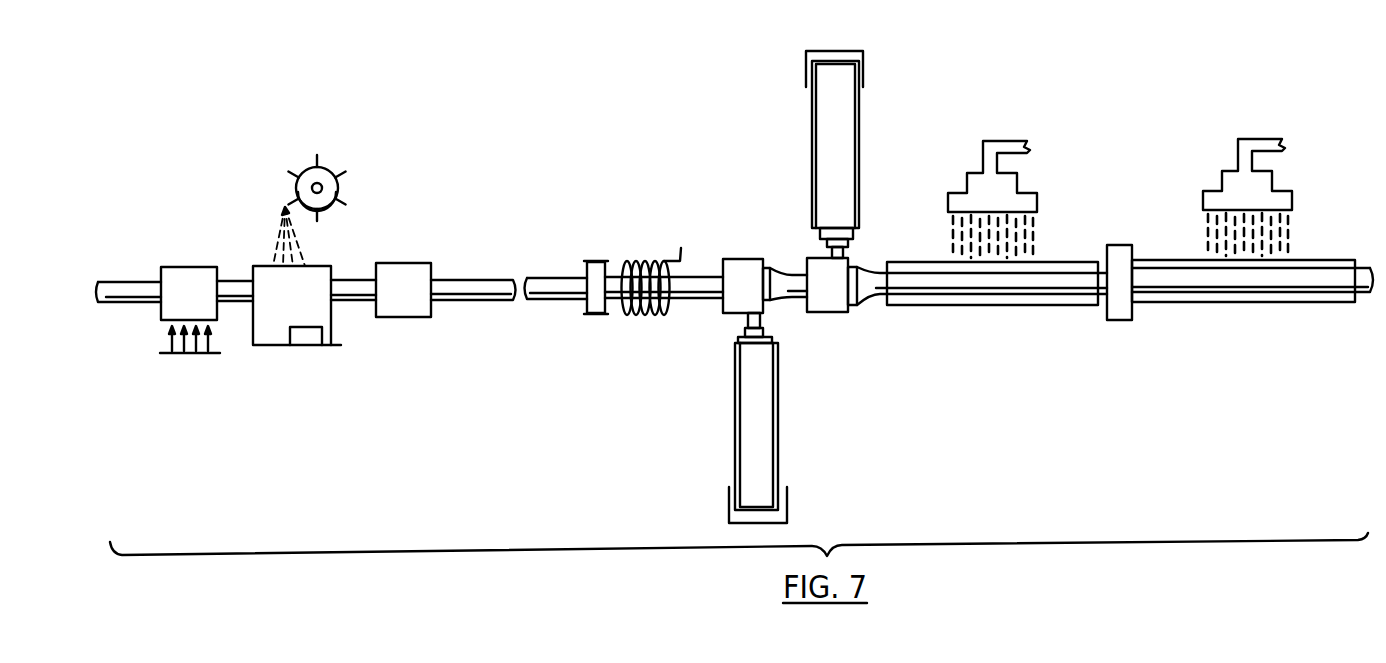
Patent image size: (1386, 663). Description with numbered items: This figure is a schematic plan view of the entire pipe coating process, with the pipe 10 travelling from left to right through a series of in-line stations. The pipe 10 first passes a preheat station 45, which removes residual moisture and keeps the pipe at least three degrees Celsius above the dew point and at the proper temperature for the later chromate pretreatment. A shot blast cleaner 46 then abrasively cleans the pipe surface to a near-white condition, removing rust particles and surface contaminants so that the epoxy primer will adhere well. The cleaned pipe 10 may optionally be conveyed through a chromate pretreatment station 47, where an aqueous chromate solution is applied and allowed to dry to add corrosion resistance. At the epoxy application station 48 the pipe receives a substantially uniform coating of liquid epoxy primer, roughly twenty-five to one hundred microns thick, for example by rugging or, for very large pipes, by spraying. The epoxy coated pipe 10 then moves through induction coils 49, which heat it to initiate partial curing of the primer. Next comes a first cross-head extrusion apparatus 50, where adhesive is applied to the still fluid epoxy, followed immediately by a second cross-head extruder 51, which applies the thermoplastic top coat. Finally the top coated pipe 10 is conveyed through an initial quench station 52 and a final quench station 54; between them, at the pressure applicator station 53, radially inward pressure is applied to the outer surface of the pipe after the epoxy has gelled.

The pipe 10 is at (480, 280).
The preheat station 45 is at (190, 267).
The shot blast cleaner 46 is at (300, 345).
The chromate pretreatment station 47 is at (406, 263).
The epoxy application station 48 is at (593, 262).
The induction coils 49 is at (648, 262).
The first cross-head extrusion apparatus 50 is at (765, 397).
The second cross-head extruder 51 is at (859, 110).
The initial quench station 52 is at (965, 183).
The pressure applicator station 53 is at (1120, 245).
The final quench station 54 is at (1222, 182).